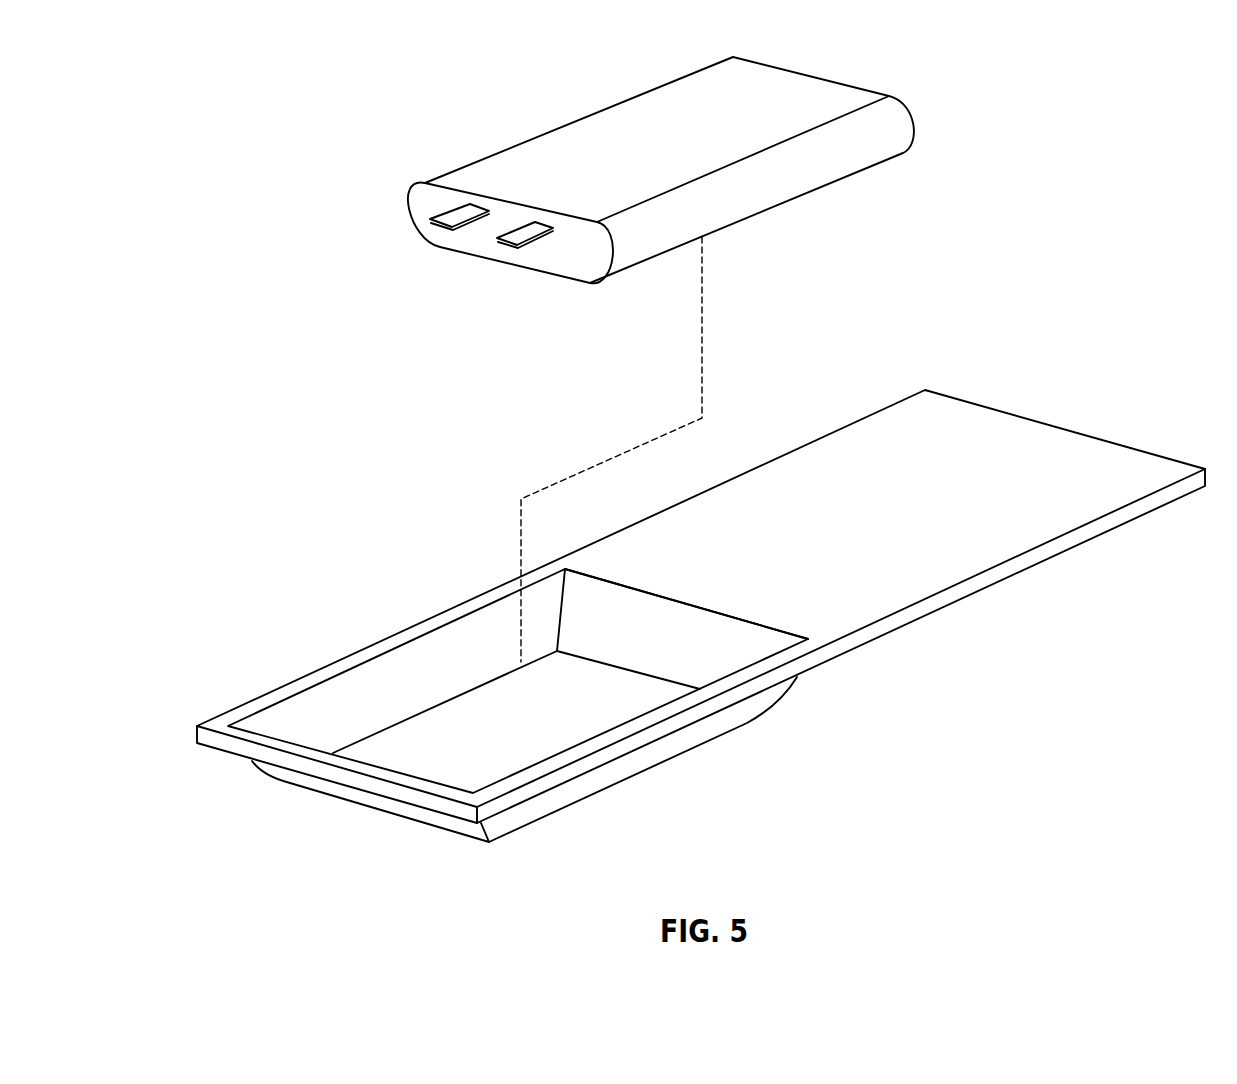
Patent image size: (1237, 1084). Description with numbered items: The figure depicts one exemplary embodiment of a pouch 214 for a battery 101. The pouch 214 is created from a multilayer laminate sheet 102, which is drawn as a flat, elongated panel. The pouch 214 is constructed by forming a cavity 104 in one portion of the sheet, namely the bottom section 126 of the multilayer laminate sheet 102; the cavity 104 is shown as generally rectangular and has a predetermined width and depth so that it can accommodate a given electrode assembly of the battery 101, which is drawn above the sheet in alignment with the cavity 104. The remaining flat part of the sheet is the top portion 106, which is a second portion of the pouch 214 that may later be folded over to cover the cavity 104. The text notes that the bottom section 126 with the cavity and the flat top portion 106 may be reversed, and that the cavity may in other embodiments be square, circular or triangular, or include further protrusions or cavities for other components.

The battery 101 is at (915, 130).
The multilayer laminate sheet 102 is at (1007, 596).
The cavity 104 is at (447, 715).
The top portion 106 is at (962, 417).
The bottom section 126 is at (353, 793).
The pouch 214 is at (1088, 400).